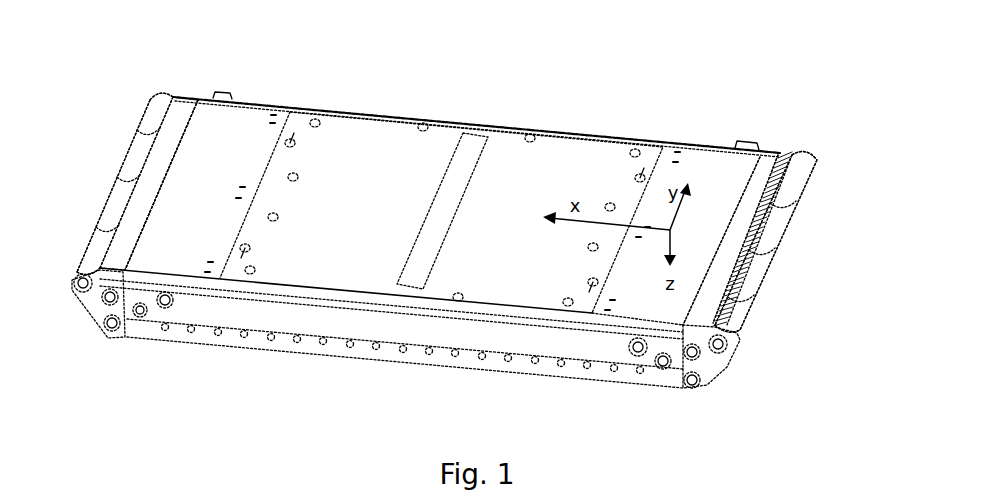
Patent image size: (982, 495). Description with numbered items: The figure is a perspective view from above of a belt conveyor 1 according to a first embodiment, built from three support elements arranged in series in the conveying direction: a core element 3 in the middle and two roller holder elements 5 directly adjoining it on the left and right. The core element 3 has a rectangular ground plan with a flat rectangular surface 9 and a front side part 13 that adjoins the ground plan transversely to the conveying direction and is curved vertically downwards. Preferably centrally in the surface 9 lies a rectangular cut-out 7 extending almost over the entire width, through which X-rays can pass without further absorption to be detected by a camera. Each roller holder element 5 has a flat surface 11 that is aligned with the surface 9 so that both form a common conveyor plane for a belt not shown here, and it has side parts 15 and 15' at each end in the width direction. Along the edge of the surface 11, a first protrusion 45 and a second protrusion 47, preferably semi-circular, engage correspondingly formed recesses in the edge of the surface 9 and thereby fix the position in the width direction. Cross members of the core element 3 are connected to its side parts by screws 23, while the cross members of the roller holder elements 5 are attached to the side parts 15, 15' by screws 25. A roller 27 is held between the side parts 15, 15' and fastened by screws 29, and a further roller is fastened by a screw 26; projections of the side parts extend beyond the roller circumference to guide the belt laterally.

The belt conveyor 1 is at (605, 48).
The core element 3 is at (343, 375).
The roller holder element 5 is at (181, 76).
The cut-out 7 is at (460, 208).
The flat rectangular surface 9 is at (602, 158).
The flat surface 11 is at (715, 278).
The front side part 13 is at (570, 373).
The front side part 15 is at (406, 346).
The rear side part 15' is at (464, 164).
The fastening screws 23 is at (168, 302).
The fastening screws 25 is at (103, 297).
The fastening screw 26 is at (115, 337).
The roller 27 is at (142, 142).
The fastening screws 29 is at (80, 275).
The first protrusion 45 is at (197, 119).
The second protrusion 47 is at (133, 252).